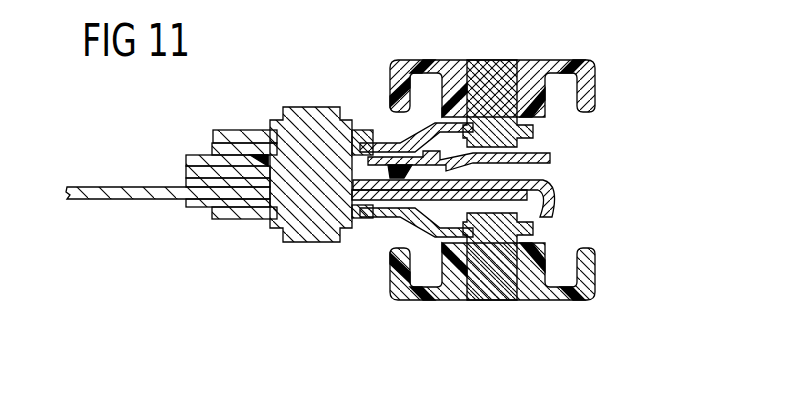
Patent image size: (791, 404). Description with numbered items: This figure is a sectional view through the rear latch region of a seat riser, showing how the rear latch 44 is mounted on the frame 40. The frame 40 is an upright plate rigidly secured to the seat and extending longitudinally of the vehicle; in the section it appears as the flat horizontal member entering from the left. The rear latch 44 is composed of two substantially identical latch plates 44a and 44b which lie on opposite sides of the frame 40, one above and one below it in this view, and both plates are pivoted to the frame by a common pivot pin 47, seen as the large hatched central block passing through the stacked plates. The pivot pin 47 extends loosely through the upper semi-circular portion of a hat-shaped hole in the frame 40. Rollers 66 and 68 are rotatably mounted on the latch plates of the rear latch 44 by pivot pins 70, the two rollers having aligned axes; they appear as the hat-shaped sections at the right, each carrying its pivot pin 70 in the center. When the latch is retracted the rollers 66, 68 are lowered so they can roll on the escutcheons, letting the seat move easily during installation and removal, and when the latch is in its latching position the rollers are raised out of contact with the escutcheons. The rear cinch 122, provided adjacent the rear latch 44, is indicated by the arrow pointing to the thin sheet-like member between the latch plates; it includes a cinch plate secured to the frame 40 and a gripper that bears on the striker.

The frame 40 is at (98, 200).
The rear latch 44 is at (206, 218).
The latch plate 44a is at (238, 220).
The latch plate 44b is at (203, 131).
The pivot pin 47 is at (313, 107).
The roller 66 is at (597, 283).
The roller 68 is at (587, 67).
The pivot pin 70 is at (488, 60).
The rear cinch 122 is at (388, 172).